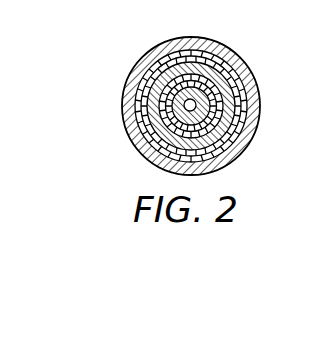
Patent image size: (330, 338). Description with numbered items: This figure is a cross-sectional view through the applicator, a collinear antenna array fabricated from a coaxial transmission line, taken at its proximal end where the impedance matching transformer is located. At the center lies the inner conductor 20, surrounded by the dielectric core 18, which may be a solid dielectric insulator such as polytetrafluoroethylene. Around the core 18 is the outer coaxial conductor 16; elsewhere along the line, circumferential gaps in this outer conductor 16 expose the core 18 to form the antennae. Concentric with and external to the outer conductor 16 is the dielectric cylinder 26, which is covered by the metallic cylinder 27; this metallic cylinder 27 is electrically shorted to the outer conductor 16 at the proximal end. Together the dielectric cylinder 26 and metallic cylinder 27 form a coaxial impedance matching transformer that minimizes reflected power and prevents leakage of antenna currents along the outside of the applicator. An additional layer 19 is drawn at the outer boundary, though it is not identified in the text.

The outer coaxial conductor 16 is at (227, 54).
The dielectric core 18 is at (200, 105).
The outer jacket 19 is at (128, 82).
The inner conductor 20 is at (250, 72).
The dielectric cylinder 26 is at (193, 51).
The metallic cylinder 27 is at (160, 64).